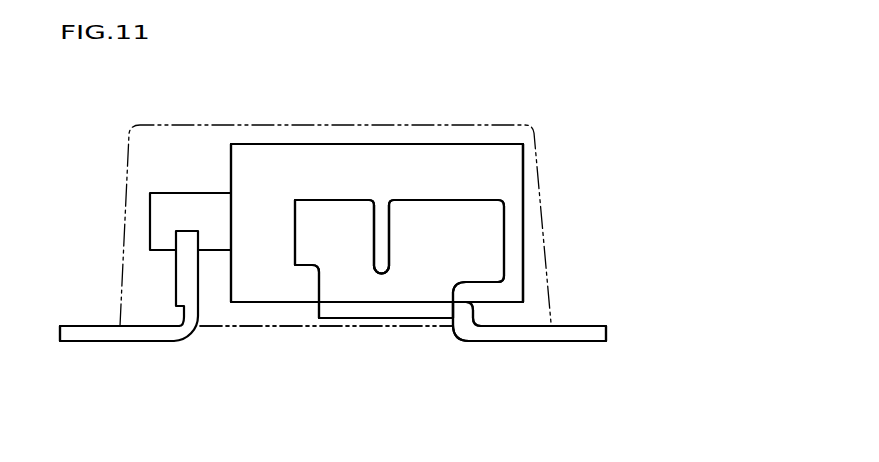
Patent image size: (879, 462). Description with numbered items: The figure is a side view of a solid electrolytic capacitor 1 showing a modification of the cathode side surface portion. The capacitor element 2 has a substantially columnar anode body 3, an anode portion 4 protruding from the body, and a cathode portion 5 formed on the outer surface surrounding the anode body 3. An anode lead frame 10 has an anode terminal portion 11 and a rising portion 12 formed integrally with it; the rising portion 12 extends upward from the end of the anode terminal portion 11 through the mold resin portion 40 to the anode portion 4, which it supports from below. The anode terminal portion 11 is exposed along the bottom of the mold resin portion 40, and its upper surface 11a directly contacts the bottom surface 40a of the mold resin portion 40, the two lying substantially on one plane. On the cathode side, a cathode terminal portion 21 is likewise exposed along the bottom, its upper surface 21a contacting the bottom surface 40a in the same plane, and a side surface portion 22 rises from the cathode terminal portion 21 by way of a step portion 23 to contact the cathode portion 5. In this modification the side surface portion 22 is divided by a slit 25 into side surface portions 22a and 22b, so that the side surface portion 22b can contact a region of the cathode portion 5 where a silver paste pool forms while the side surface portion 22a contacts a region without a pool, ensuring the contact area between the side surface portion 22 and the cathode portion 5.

The solid electrolytic capacitor 1 is at (544, 101).
The capacitor element 2 is at (399, 58).
The anode body 3 is at (332, 159).
The anode portion 4 is at (187, 199).
The cathode portion 5 is at (402, 159).
The anode lead frame 10 is at (141, 328).
The anode terminal portion 11 is at (144, 334).
The upper surface of anode terminal portion 11a is at (80, 317).
The rising portion 12 is at (184, 273).
The cathode terminal portion 21 is at (490, 334).
The upper surface of cathode terminal portion 21a is at (574, 317).
The side surface portion 22 is at (399, 315).
The side surface portion 22a is at (337, 234).
The side surface portion 22b is at (424, 233).
The step portion 23 is at (458, 313).
The slit 25 is at (376, 243).
The mold resin portion 40 is at (479, 117).
The bottom surface of mold resin portion 40a is at (250, 321).